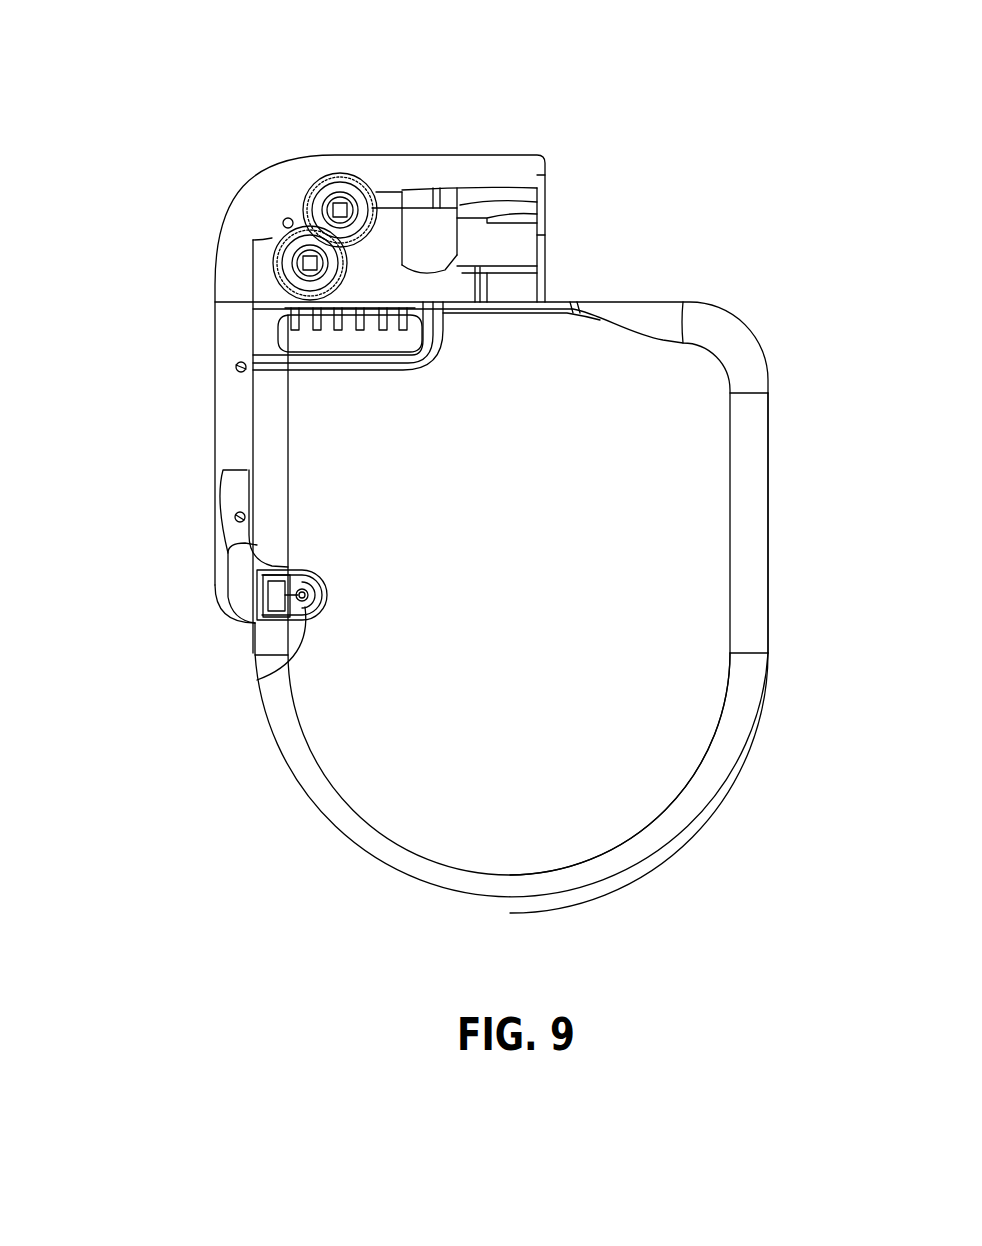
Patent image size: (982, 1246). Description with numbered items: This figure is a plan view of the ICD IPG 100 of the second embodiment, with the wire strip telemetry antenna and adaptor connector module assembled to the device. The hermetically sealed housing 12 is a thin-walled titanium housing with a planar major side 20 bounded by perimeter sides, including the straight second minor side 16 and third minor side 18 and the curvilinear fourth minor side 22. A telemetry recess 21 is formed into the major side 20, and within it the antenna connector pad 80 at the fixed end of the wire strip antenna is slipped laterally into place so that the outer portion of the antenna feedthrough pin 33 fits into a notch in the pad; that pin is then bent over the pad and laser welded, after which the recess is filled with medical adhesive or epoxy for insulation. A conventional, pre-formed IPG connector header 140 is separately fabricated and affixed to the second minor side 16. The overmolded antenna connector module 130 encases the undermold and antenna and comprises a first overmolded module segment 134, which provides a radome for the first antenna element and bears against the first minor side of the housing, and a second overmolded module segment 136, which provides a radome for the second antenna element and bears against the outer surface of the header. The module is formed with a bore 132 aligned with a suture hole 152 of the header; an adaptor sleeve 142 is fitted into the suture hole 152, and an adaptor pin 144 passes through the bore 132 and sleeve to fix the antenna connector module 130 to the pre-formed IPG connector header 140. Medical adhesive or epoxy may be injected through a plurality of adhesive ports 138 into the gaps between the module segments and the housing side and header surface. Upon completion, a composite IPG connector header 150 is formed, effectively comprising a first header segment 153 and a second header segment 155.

The hermetically sealed housing 12 is at (793, 482).
The second minor side 16 is at (560, 293).
The third minor side 18 is at (772, 573).
The planar major side 20 is at (678, 707).
The curvilinear fourth minor side 22 is at (727, 793).
The telemetry recess 21 is at (257, 680).
The antenna feedthrough pin 33 is at (258, 590).
The antenna connector pad 80 is at (253, 625).
The ICD IPG 100 is at (543, 1102).
The antenna connector module 130 is at (497, 113).
The bore 132 is at (373, 137).
The first overmolded module segment 134 is at (223, 337).
The second overmolded module segment 136 is at (507, 170).
The adhesive ports 138 is at (240, 510).
The pre-formed IPG connector header 140 is at (562, 237).
The adaptor sleeve 142 is at (301, 173).
The adaptor pin 144 is at (310, 204).
The composite IPG connector header 150 is at (589, 176).
The suture hole 152 is at (325, 195).
The first header segment 153 is at (177, 212).
The second header segment 155 is at (545, 93).